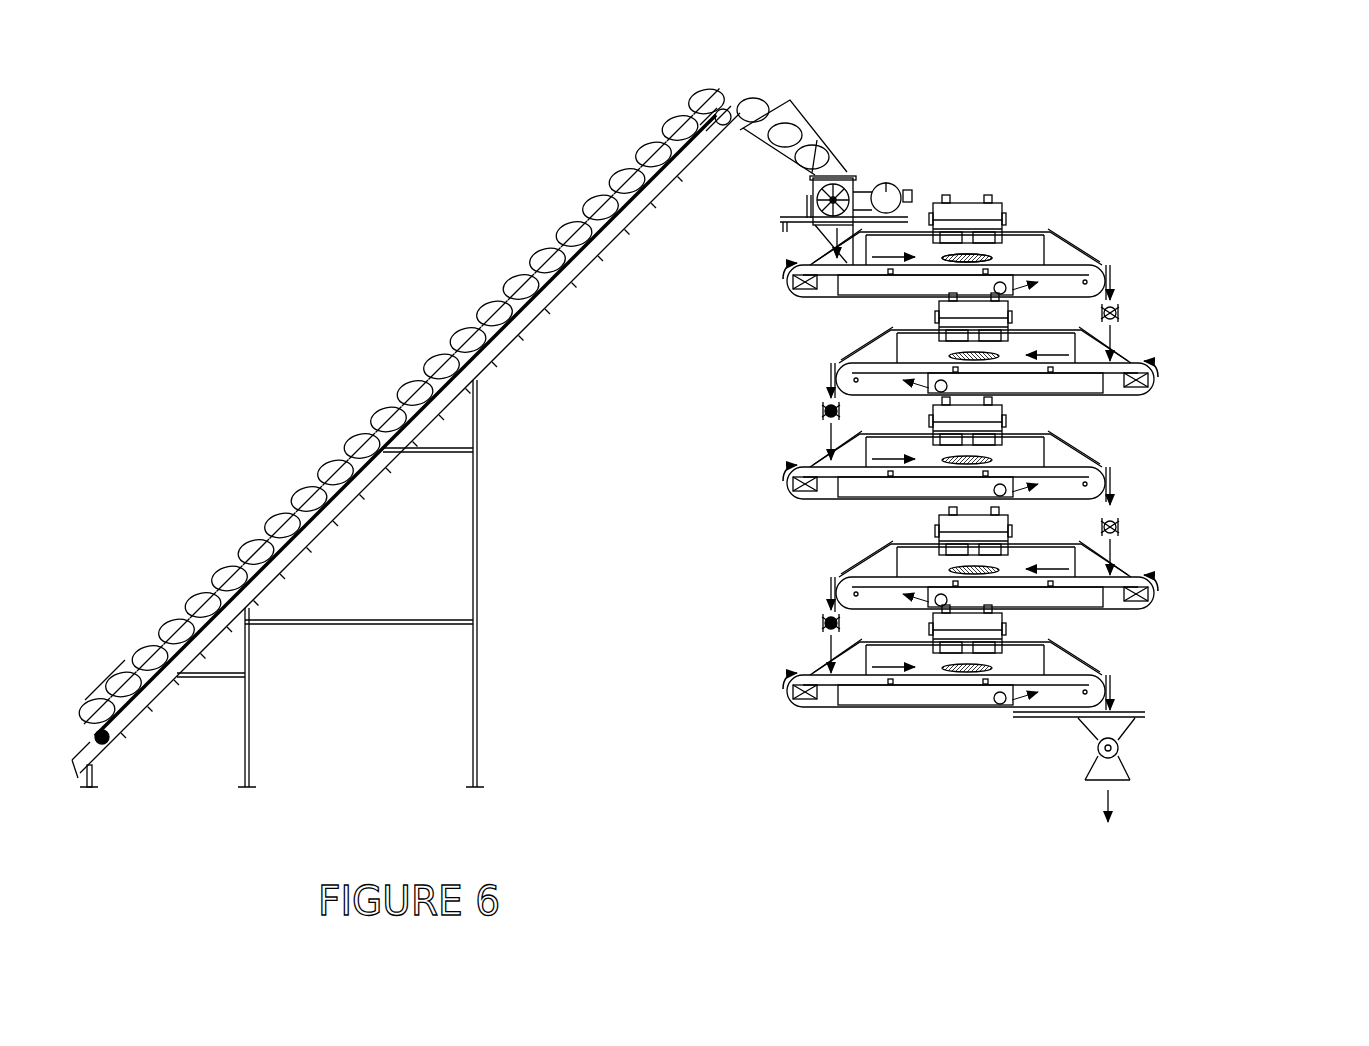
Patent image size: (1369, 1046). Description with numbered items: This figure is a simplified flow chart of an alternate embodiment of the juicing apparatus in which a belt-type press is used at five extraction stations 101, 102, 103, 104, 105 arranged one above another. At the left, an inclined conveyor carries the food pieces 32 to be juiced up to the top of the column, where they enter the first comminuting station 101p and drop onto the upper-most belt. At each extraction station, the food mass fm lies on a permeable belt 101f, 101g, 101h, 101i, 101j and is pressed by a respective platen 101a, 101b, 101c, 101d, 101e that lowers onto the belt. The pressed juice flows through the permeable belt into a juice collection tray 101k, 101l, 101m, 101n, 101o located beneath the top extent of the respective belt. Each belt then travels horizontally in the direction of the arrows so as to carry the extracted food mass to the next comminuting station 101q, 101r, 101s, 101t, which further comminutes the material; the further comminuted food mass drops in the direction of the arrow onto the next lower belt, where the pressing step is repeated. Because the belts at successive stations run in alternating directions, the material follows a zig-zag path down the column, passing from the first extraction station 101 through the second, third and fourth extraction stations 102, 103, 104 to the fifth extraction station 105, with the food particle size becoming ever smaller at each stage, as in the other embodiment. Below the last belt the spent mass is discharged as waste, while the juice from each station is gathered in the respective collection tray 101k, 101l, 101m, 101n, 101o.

The food pieces 32 is at (157, 632).
The first extraction station 101 is at (940, 471).
The platen 101a is at (1003, 232).
The platen 101b is at (945, 310).
The platen 101c is at (1004, 427).
The platen 101d is at (940, 526).
The platen 101e is at (1004, 632).
The permeable belt 101f is at (1033, 270).
The permeable belt 101g is at (867, 362).
The permeable belt 101h is at (1068, 472).
The permeable belt 101i is at (882, 572).
The permeable belt 101j is at (1070, 673).
The juice collection tray 101k is at (857, 289).
The juice collection tray 101l is at (1090, 382).
The juice collection tray 101m is at (857, 494).
The juice collection tray 101n is at (1082, 600).
The juice collection tray 101o is at (870, 700).
The comminuting station 101p is at (837, 193).
The comminuting station 101q is at (1118, 307).
The comminuting station 101r is at (828, 408).
The comminuting station 101s is at (1118, 528).
The comminuting station 101t is at (828, 624).
The second extraction station 102 is at (936, 376).
The third extraction station 103 is at (999, 485).
The fourth extraction station 104 is at (959, 594).
The fifth extraction station 105 is at (1015, 738).
The food mass fm is at (935, 257).